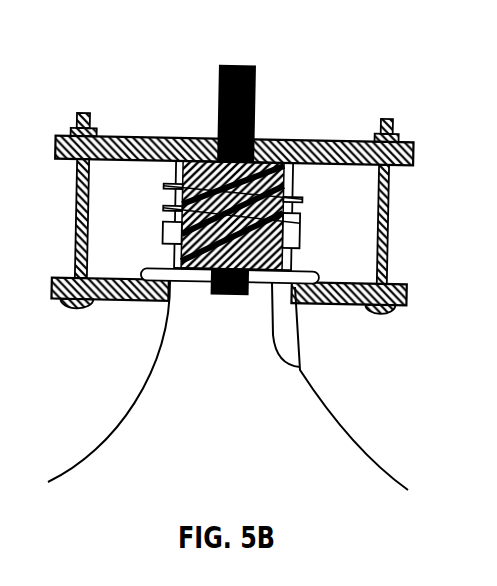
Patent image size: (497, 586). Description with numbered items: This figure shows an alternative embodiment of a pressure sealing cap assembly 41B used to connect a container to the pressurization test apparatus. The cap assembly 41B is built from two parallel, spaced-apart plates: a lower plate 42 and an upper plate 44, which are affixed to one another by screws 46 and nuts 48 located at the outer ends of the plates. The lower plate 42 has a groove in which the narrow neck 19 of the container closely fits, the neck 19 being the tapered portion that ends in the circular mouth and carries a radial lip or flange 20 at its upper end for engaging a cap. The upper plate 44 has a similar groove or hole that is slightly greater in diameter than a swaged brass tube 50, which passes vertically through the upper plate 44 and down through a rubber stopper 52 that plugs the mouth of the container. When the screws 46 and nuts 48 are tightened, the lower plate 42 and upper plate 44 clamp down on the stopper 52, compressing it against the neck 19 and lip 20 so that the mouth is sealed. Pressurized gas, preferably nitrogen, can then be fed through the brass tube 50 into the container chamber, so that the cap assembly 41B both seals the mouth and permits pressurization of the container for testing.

The cap assembly 41B is at (186, 114).
The upper plate 44 is at (412, 158).
The nuts 48 is at (412, 143).
The screws 46 is at (390, 228).
The lower plate 42 is at (410, 296).
The swaged brass tube 50 is at (255, 93).
The rubber stopper 52 is at (182, 243).
The neck 19 is at (298, 338).
The radial lip 20 is at (302, 367).